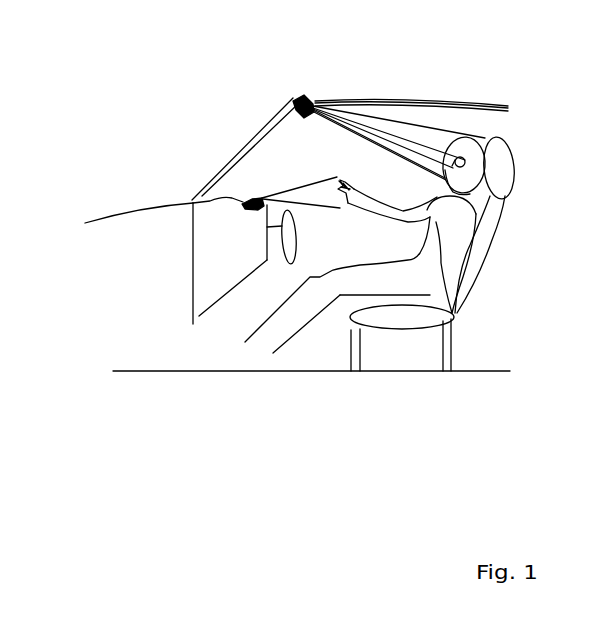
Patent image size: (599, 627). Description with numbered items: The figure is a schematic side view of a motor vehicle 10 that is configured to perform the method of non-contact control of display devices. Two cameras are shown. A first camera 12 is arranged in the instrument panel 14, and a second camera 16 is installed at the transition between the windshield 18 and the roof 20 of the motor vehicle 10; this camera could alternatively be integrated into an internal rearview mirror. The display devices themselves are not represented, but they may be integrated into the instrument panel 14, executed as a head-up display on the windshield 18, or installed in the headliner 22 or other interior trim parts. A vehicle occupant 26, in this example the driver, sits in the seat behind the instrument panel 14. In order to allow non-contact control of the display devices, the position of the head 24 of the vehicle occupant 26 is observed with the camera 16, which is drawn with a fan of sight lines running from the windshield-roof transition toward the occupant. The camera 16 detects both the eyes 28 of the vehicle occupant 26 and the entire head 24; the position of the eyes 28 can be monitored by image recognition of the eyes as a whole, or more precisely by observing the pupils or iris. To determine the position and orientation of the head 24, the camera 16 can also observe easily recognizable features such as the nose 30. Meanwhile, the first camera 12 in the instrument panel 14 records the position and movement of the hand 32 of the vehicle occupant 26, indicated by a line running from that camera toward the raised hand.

The motor vehicle 10 is at (88, 304).
The first camera 12 is at (261, 197).
The instrument panel 14 is at (230, 240).
The second camera 16 is at (302, 95).
The windshield 18 is at (227, 157).
The roof 20 is at (365, 100).
The headliner 22 is at (398, 102).
The head 24 is at (498, 141).
The vehicle occupant 26 is at (437, 253).
The eyes 28 is at (508, 174).
The nose 30 is at (398, 165).
The hand 32 is at (337, 210).